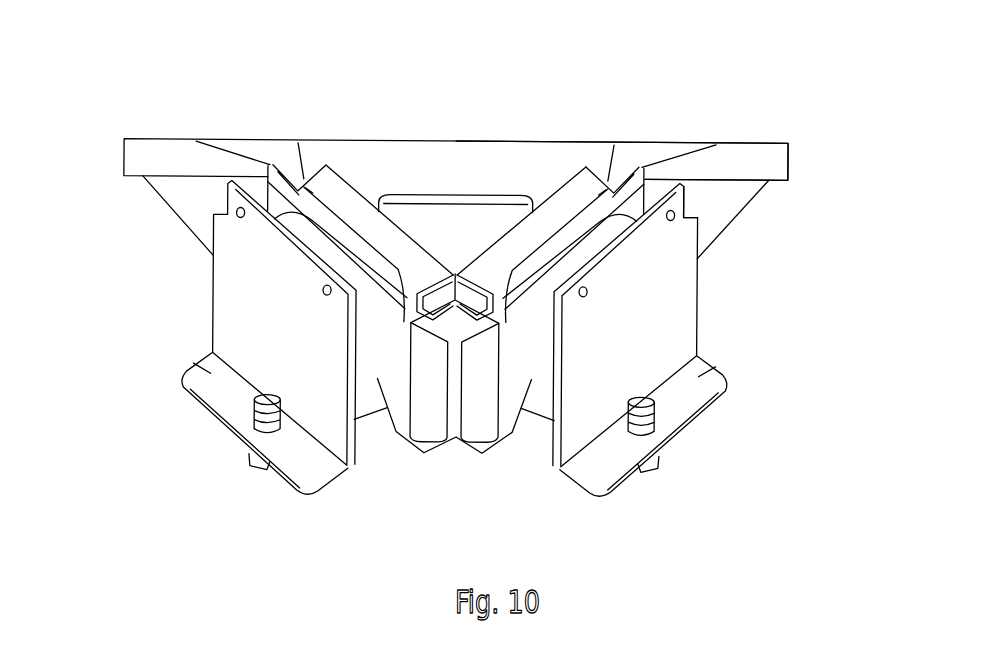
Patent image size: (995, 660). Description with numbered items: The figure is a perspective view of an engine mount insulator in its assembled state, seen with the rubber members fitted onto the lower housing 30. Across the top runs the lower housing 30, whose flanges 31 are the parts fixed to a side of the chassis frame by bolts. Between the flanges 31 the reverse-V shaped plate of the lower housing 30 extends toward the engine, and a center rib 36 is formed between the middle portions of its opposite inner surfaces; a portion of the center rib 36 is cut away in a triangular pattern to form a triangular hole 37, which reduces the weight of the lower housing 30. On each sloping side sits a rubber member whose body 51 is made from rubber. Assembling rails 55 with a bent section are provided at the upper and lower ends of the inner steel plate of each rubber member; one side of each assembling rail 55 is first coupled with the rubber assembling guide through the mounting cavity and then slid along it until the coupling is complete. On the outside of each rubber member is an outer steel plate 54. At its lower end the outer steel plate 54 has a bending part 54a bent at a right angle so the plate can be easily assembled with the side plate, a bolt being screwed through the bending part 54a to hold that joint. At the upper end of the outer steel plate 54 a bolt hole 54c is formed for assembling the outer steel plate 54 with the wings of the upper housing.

The lower housing 30 is at (164, 141).
The flange 31 is at (748, 162).
The center rib 36 is at (497, 162).
The triangular hole 37 is at (443, 220).
The body 51 is at (381, 380).
The outer steel plate 54 is at (237, 303).
The bending part 54a is at (190, 364).
The bolt hole 54c is at (683, 210).
The assembling rail 55 is at (343, 200).